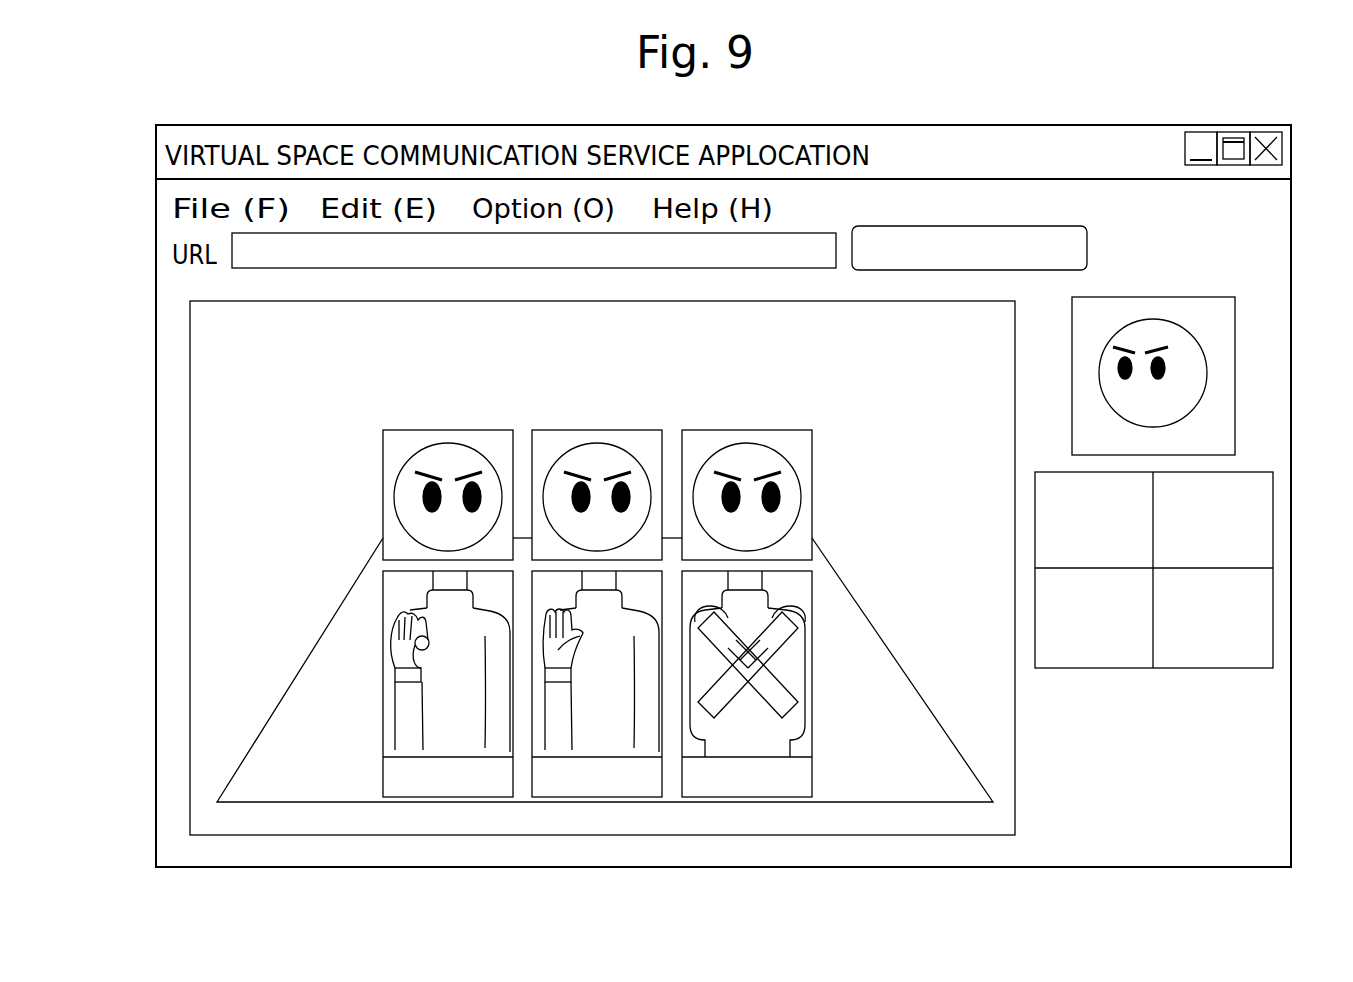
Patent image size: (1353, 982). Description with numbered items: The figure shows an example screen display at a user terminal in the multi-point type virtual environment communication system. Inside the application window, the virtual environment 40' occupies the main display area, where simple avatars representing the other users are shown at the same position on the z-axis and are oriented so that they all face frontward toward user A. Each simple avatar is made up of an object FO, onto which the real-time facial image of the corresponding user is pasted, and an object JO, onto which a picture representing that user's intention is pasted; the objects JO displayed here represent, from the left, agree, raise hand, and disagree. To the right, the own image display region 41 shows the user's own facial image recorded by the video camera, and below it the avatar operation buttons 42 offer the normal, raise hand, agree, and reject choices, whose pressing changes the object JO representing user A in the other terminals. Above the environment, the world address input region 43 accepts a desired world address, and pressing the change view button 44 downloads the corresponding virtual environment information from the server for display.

The virtual environment 40' is at (545, 568).
The own image display region 41 is at (1235, 352).
The avatar operation button 42 is at (1289, 504).
The world address input region 43 is at (235, 268).
The change view button 44 is at (1087, 248).
The object for pasting real-time facial images FO is at (813, 433).
The object for pasting pictures representing intentions JO is at (813, 610).